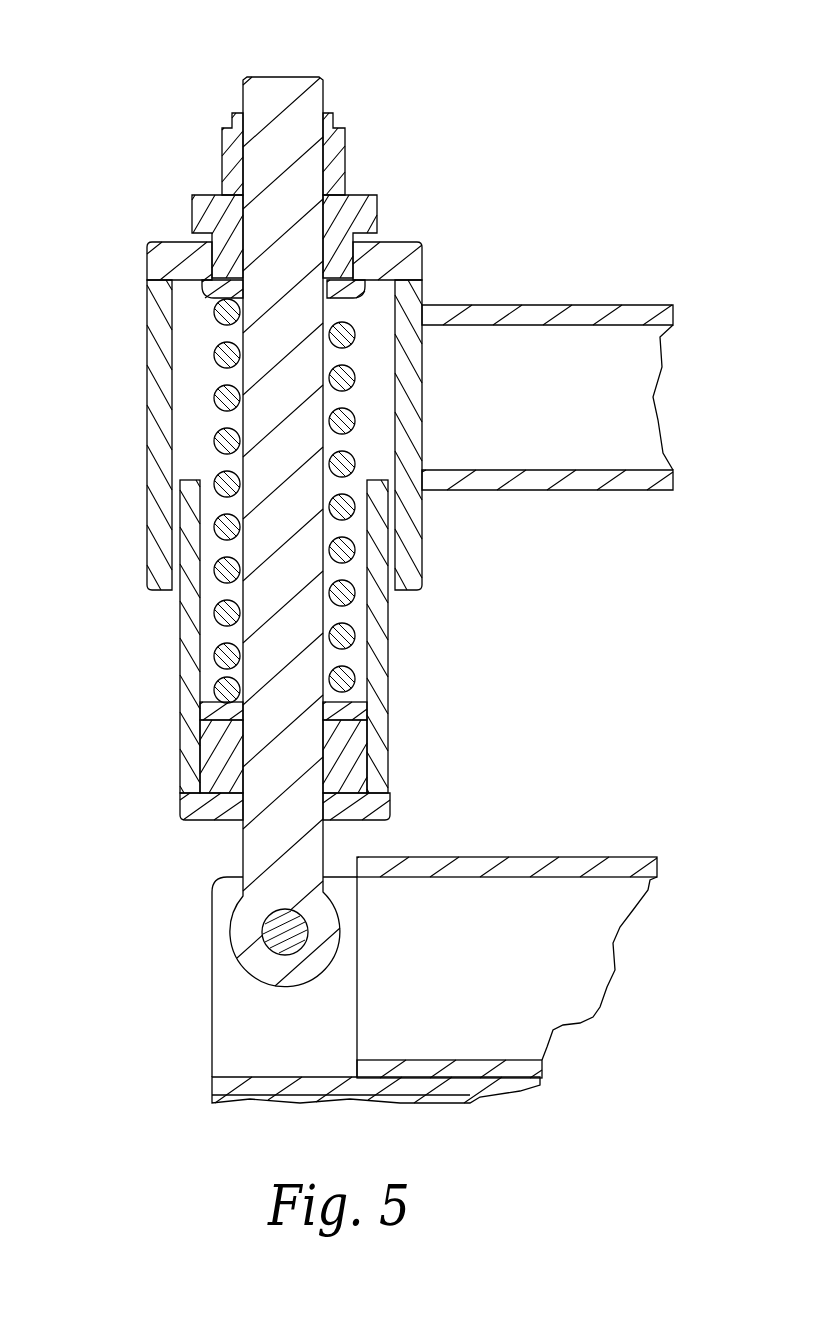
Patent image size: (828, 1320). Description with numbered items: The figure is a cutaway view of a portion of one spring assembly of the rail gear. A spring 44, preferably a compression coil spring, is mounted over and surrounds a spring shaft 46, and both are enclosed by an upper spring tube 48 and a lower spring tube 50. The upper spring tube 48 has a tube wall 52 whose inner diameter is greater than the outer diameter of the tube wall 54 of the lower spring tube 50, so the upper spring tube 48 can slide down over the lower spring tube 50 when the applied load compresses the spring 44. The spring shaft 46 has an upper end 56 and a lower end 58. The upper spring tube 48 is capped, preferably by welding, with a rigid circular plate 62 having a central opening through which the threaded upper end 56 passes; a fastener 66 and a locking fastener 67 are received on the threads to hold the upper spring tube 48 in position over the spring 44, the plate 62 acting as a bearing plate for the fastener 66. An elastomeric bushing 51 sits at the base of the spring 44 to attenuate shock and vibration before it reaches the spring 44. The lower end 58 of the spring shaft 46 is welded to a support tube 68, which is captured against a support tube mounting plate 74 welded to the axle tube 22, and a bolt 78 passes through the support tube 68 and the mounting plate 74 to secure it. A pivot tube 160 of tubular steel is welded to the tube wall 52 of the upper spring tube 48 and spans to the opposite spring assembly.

The axle tube 22 is at (607, 865).
The spring 44 is at (222, 350).
The spring shaft 46 is at (265, 211).
The upper spring tube 48 is at (413, 568).
The lower spring tube 50 is at (180, 620).
The elastomeric bushing 51 is at (360, 758).
The tube wall 52 is at (422, 510).
The tube wall 54 is at (182, 708).
The upper end 56 is at (272, 77).
The lower end 58 is at (243, 847).
The rigid circular plate 62 is at (425, 250).
The fastener 66 is at (377, 198).
The locking fastener 67 is at (343, 147).
The support tube 68 is at (243, 920).
The support tube mounting plate 74 is at (230, 1042).
The bolt 78 is at (275, 938).
The pivot tube 160 is at (608, 305).